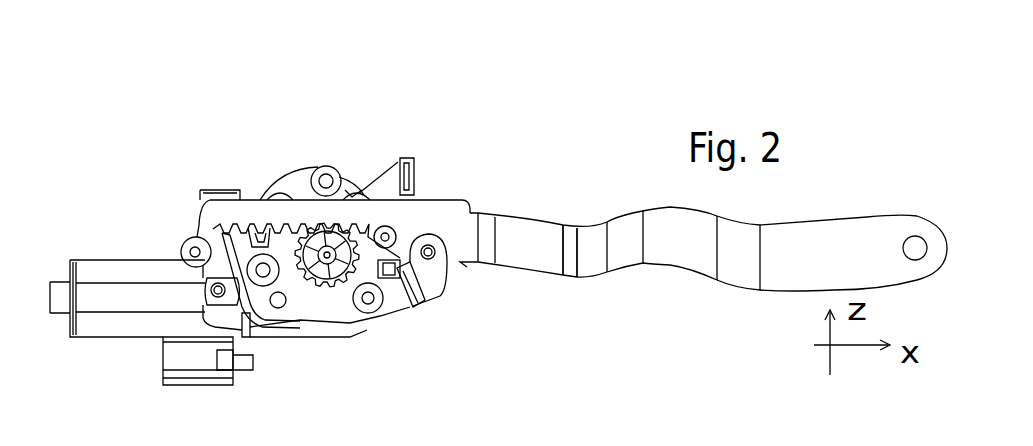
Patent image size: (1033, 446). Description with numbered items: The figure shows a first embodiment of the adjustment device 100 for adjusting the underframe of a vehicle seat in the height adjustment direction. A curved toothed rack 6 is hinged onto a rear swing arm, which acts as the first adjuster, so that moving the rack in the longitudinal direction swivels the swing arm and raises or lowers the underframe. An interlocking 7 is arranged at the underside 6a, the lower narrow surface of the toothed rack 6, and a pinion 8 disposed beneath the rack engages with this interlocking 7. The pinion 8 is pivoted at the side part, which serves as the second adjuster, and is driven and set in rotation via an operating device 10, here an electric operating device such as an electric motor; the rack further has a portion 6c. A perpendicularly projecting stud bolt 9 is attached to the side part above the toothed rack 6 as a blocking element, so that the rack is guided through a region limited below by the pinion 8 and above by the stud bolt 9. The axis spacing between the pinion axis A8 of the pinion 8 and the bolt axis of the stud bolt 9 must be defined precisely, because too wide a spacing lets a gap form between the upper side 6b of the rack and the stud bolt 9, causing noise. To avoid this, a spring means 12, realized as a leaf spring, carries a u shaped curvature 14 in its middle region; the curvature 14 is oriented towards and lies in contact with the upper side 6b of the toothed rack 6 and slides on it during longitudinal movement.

The adjustment device 100 is at (222, 87).
The operating device 10 is at (132, 272).
The toothed rack 6 is at (470, 220).
The underside 6a is at (452, 266).
The upper side 6b is at (432, 195).
The lever grip portion 6c is at (533, 237).
The interlocking 7 is at (258, 223).
The pinion 8 is at (337, 285).
The pinion axis A8 is at (303, 284).
The stud bolt 9 is at (327, 164).
The spring means 12 is at (405, 158).
The curvature 14 is at (357, 182).